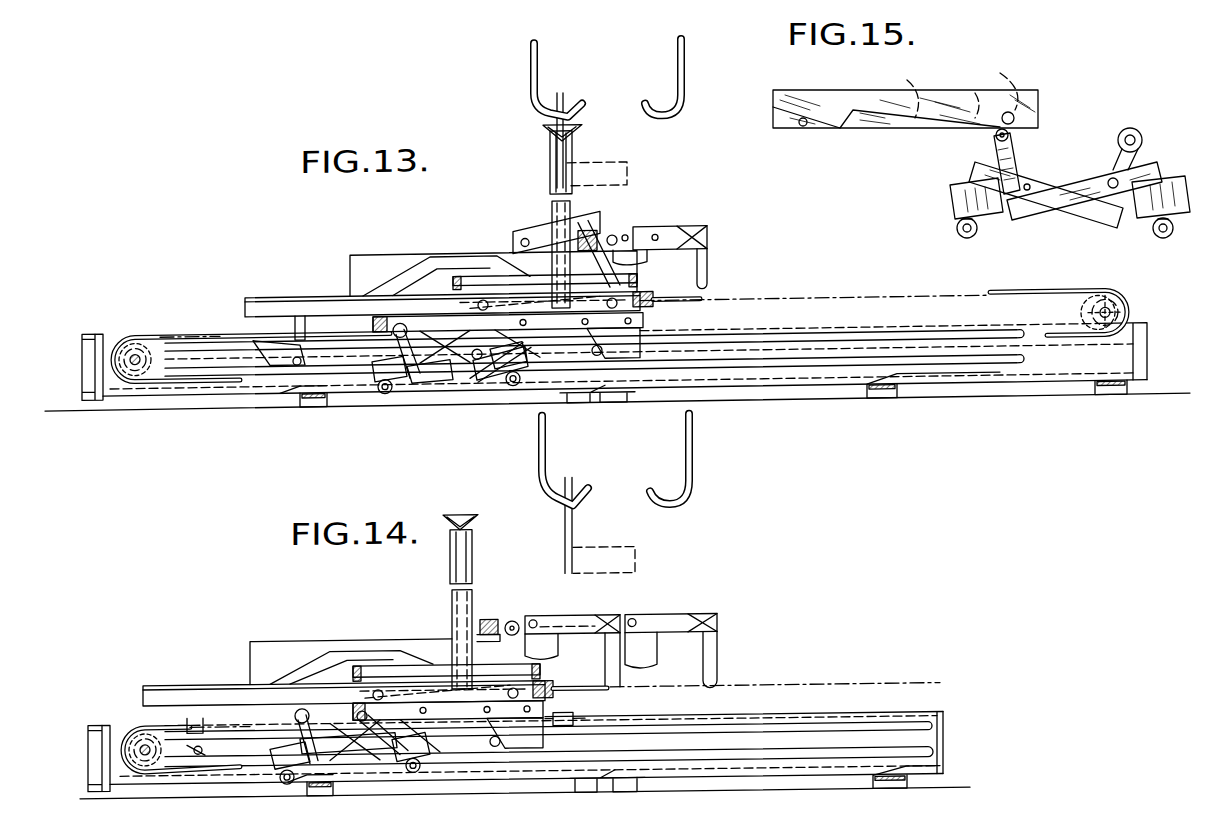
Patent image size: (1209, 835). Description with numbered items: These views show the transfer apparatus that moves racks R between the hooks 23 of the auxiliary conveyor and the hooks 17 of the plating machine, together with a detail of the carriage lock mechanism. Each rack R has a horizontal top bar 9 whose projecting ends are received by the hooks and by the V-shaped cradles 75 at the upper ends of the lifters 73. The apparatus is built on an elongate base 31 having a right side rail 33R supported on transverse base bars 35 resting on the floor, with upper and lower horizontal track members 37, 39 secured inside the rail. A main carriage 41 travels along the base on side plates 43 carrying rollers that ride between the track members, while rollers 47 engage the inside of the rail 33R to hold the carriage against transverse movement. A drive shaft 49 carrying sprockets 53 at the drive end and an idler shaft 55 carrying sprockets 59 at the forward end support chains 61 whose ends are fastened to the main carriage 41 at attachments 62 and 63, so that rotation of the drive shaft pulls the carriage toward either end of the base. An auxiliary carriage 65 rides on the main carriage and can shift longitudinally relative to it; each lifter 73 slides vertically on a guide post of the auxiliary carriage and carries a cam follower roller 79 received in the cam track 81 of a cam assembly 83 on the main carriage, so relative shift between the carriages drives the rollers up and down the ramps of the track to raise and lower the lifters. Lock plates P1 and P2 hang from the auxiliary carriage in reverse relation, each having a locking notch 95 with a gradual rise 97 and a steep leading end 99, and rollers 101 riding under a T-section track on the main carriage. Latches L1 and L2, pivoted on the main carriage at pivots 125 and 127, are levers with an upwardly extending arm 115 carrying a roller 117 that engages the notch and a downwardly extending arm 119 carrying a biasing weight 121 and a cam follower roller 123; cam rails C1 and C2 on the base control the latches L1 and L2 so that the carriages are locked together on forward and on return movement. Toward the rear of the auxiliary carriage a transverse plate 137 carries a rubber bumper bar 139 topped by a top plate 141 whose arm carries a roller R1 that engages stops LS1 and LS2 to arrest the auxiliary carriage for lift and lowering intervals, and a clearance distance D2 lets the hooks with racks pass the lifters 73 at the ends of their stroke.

In FIG. 13, the top bar 9 is at (560, 92).
In FIG. 14, the top bar 9 is at (568, 477).
In FIG. 13, the hooks 17 is at (541, 110).
In FIG. 14, the hooks 17 is at (548, 497).
In FIG. 13, the hooks 23 is at (685, 104).
In FIG. 14, the hooks 23 is at (686, 490).
In FIG. 13, the base 31 is at (83, 321).
In FIG. 14, the base 31 is at (89, 714).
In FIG. 13, the right side rail 33R is at (1133, 362).
In FIG. 14, the right side rail 33R is at (940, 735).
In FIG. 13, the transverse base bars 35 is at (306, 402).
In FIG. 13, the upper horizontal track member 37 is at (1003, 336).
In FIG. 14, the upper horizontal track member 37 is at (913, 726).
In FIG. 13, the lower horizontal track member 39 is at (1022, 366).
In FIG. 14, the lower horizontal track member 39 is at (933, 757).
In FIG. 13, the main carriage 41 is at (245, 305).
In FIG. 14, the main carriage 41 is at (143, 700).
In FIG. 13, the side plates 43 is at (272, 355).
In FIG. 14, the rollers 47 is at (576, 722).
In FIG. 13, the drive shaft 49 is at (1110, 318).
In FIG. 13, the sprockets 53 is at (1080, 320).
In FIG. 13, the idler shaft 55 is at (135, 350).
In FIG. 13, the sprockets 59 is at (170, 341).
In FIG. 13, the chains 61 is at (1057, 296).
In FIG. 13, the chain end attachment 62 is at (648, 294).
In FIG. 14, the chain end attachment 62 is at (556, 687).
In FIG. 13, the chain end attachment 63 is at (296, 318).
In FIG. 13, the auxiliary carriage 65 is at (457, 276).
In FIG. 14, the auxiliary carriage 65 is at (357, 668).
In FIG. 13, the lifter 73 is at (550, 183).
In FIG. 14, the lifter 73 is at (450, 569).
In FIG. 13, the V-shaped cradle 75 is at (583, 127).
In FIG. 13, the cam follower roller 79 is at (508, 338).
In FIG. 14, the cam follower roller 79 is at (436, 731).
In FIG. 13, the cam slot or track 81 is at (422, 266).
In FIG. 14, the cam slot or track 81 is at (326, 649).
In FIG. 13, the cam assembly 83 is at (357, 246).
In FIG. 14, the cam assembly 83 is at (261, 633).
In FIG. 15, the locking notch 95 is at (930, 132).
In FIG. 15, the gradual rise 97 is at (929, 93).
In FIG. 15, the steep leading end 99 is at (972, 93).
In FIG. 15, the rollers 101 is at (1004, 86).
In FIG. 15, the upwardly extending arm 115 is at (1020, 152).
In FIG. 15, the roller 117 is at (1131, 128).
In FIG. 15, the downwardly extending arm 119 is at (977, 226).
In FIG. 15, the biasing weight 121 is at (950, 195).
In FIG. 15, the cam follower roller 123 is at (957, 229).
In FIG. 15, the pivot 125 is at (1110, 180).
In FIG. 15, the pivot 127 is at (1030, 185).
In FIG. 14, the transverse plate 137 is at (480, 640).
In FIG. 14, the rubber bumper bar 139 is at (480, 627).
In FIG. 14, the top plate 141 is at (488, 618).
In FIG. 13, the rack R is at (575, 152).
In FIG. 14, the rack R is at (580, 530).
In FIG. 13, the roller R1 is at (627, 236).
In FIG. 14, the roller R1 is at (517, 621).
In FIG. 13, the lock plate P1 is at (648, 308).
In FIG. 14, the lock plate P1 is at (552, 695).
In FIG. 15, the lock plate P1 is at (888, 90).
In FIG. 13, the lock plate P2 is at (458, 310).
In FIG. 14, the lock plate P2 is at (350, 678).
In FIG. 15, the lock plate P2 is at (862, 128).
In FIG. 13, the latch L1 is at (421, 386).
In FIG. 14, the latch L1 is at (428, 740).
In FIG. 15, the latch L1 is at (1165, 167).
In FIG. 13, the latch L2 is at (481, 386).
In FIG. 14, the latch L2 is at (270, 751).
In FIG. 15, the latch L2 is at (960, 175).
In FIG. 13, the stop LS1 is at (714, 233).
In FIG. 14, the stop LS1 is at (717, 613).
In FIG. 13, the stop LS2 is at (600, 223).
In FIG. 14, the stop LS2 is at (595, 613).
In FIG. 13, the cam rail C1 is at (348, 392).
In FIG. 13, the cam rail C2 is at (845, 384).
In FIG. 14, the clearance distance D2 is at (559, 548).